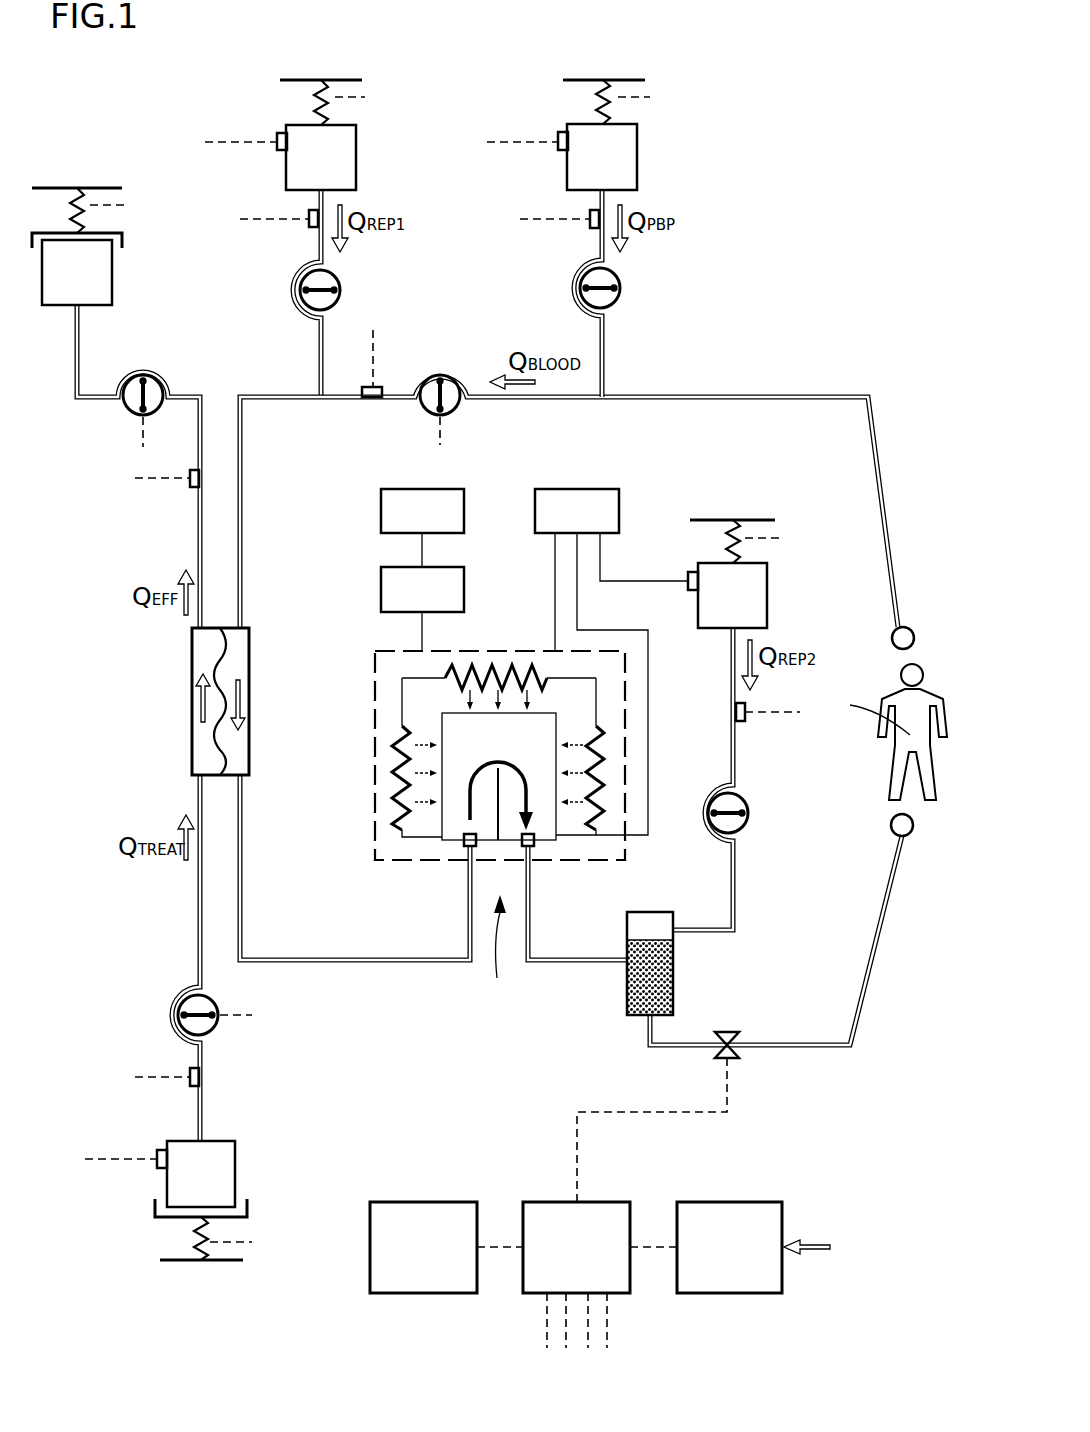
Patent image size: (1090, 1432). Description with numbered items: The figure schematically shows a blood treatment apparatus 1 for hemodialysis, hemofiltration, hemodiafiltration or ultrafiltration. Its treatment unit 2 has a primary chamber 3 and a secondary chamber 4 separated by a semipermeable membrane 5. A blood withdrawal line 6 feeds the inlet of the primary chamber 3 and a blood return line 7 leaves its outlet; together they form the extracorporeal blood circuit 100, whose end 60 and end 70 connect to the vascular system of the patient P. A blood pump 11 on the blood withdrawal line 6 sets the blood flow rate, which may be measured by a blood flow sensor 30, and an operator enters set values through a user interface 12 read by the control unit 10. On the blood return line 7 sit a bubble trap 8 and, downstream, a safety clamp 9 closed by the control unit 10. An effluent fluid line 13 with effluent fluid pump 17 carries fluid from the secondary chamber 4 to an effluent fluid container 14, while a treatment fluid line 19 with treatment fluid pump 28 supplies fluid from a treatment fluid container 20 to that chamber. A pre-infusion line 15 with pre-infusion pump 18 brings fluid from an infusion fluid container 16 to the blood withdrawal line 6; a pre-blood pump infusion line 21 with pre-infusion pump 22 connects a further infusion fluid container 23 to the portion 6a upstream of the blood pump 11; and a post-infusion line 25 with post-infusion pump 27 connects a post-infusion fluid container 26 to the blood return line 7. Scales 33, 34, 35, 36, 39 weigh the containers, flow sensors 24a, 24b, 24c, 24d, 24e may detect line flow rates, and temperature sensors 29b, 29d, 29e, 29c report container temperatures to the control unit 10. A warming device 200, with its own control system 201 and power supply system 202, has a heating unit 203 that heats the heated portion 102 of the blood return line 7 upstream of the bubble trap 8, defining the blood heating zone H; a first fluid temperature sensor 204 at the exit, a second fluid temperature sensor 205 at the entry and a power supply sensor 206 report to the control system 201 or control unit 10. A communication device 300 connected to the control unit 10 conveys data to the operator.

The blood treatment apparatus 1 is at (845, 38).
The treatment unit 2 is at (270, 752).
The primary chamber 3 is at (262, 660).
The secondary chamber 4 is at (200, 752).
The semipermeable membrane 5 is at (212, 668).
The blood withdrawal line 6 is at (298, 400).
The portion of the blood withdrawal line 6a is at (552, 400).
The blood return line 7 is at (350, 963).
The bubble trap 8 is at (650, 912).
The safety clamp 9 is at (735, 1032).
The control unit 10 is at (602, 1203).
The blood pump 11 is at (440, 373).
The user interface 12 is at (753, 1247).
The effluent fluid line 13 is at (118, 405).
The effluent fluid container 14 is at (112, 272).
The pre-infusion line 15 is at (300, 357).
The infusion fluid container 16 is at (356, 162).
The effluent fluid pump 17 is at (143, 373).
The pre-infusion pump 18 is at (300, 290).
The treatment fluid line 19 is at (205, 1102).
The treatment fluid container 20 is at (237, 1152).
The pre-blood pump infusion line 21 is at (622, 360).
The pre-infusion pump 22 is at (580, 288).
The further infusion fluid container 23 is at (637, 167).
The flow sensor 24a is at (193, 490).
The flow sensor 24b is at (309, 216).
The flow sensor 24c is at (190, 1075).
The flow sensor 24d is at (590, 216).
The flow sensor 24e is at (745, 716).
The post-infusion line 25 is at (755, 775).
The post-infusion fluid container 26 is at (767, 607).
The post-infusion pump 27 is at (722, 795).
The treatment fluid pump 28 is at (185, 998).
The temperature sensor 29b is at (277, 138).
The temperature sensor 29c is at (157, 1157).
The temperature sensor 29d is at (558, 138).
The temperature sensor 29e is at (690, 594).
The blood flow sensor 30 is at (378, 387).
The scale 33 is at (78, 190).
The scale 34 is at (318, 106).
The scale 35 is at (200, 1258).
The scale 36 is at (600, 106).
The scale 39 is at (730, 532).
The end of the blood withdrawal line 60 is at (908, 627).
The end of the blood return line 70 is at (908, 836).
The extracorporeal blood circuit 100 is at (800, 338).
The heated portion 102 is at (440, 836).
The warming device 200 is at (328, 603).
The control system 201 is at (611, 662).
The power supply system 202 is at (422, 528).
The heating unit 203 is at (525, 672).
The first fluid temperature sensor 204 is at (532, 848).
The second fluid temperature sensor 205 is at (468, 848).
The power supply sensor 206 is at (422, 609).
The communication device 300 is at (423, 1247).
The patient P is at (891, 732).
The blood heating zone H is at (497, 949).